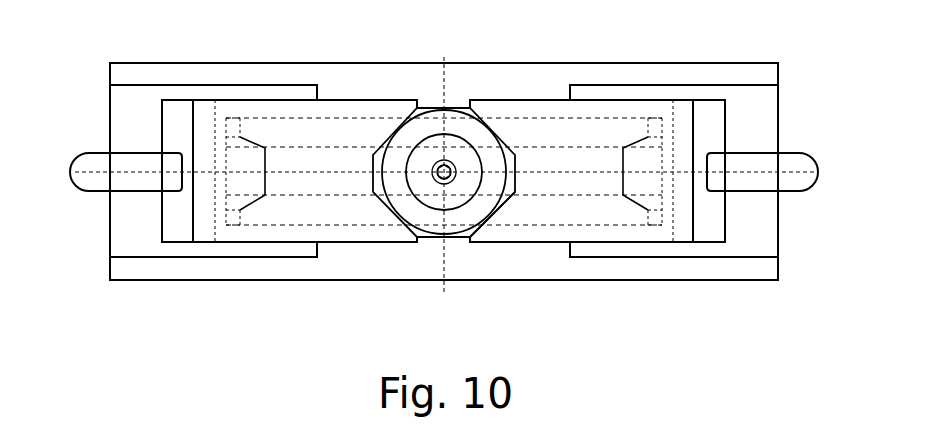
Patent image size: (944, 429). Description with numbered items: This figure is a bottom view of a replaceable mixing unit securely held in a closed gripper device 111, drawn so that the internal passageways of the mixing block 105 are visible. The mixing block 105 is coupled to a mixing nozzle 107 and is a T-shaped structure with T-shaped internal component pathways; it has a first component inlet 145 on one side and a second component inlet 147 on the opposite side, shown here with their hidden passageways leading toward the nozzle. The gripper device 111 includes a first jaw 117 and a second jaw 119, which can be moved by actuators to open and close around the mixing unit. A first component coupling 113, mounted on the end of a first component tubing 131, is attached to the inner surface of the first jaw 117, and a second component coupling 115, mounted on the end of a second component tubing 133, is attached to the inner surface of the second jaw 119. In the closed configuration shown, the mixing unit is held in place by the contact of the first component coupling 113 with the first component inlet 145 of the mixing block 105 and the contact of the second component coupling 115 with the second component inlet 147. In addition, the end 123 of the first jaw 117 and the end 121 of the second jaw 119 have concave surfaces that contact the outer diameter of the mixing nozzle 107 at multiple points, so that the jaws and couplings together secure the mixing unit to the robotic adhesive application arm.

The mixing block 105 is at (358, 128).
The mixing nozzle 107 is at (455, 112).
The gripper device 111 is at (177, 48).
The first component coupling 113 is at (235, 143).
The second component coupling 115 is at (652, 150).
The first jaw 117 is at (331, 108).
The second jaw 119 is at (541, 110).
The end of the second jaw 121 is at (483, 237).
The end of the first jaw 123 is at (405, 235).
The first component tubing 131 is at (82, 162).
The second component tubing 133 is at (797, 168).
The first component inlet 145 is at (252, 212).
The second component inlet 147 is at (640, 212).